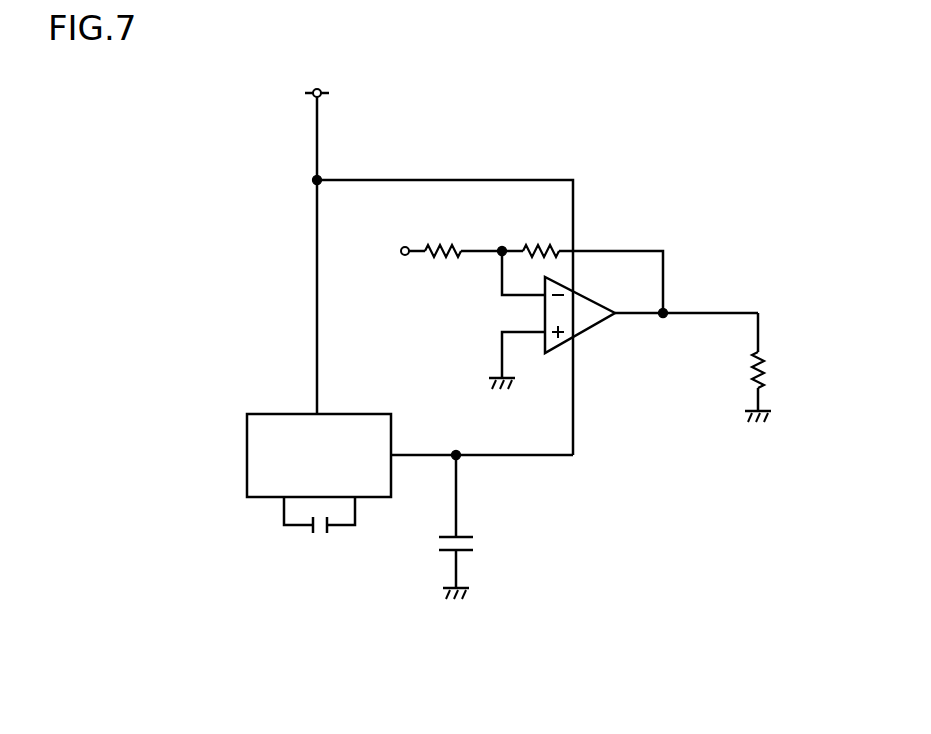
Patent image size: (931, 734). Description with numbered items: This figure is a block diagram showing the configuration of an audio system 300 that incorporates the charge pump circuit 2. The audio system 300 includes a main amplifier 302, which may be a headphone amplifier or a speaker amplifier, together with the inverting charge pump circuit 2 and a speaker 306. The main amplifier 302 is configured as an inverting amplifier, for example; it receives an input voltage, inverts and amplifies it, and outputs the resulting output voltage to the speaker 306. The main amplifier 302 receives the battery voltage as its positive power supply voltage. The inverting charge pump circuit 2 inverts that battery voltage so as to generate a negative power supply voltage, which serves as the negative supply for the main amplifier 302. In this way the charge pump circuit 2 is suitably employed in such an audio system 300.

The audio system 300 is at (525, 717).
The charge pump circuit 2 is at (355, 413).
The main amplifier 302 is at (620, 288).
The speaker 306 is at (770, 372).